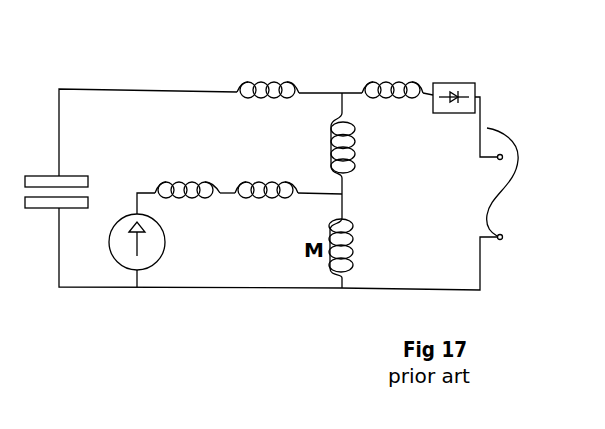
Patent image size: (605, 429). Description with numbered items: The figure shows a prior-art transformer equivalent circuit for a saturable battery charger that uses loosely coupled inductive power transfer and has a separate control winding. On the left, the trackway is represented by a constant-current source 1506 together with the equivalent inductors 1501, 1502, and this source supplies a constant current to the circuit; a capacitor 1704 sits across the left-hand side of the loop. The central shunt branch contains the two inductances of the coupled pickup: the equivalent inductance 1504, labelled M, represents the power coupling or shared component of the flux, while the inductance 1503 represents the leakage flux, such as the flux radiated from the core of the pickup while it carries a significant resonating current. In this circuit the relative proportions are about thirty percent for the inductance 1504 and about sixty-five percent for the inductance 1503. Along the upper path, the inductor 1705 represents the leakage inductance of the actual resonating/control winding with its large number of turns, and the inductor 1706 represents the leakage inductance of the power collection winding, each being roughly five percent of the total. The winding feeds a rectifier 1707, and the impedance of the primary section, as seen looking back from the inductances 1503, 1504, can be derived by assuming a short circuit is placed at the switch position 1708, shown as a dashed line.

The capacitor 1704 is at (105, 156).
The leakage inductance of resonating/control winding 1705 is at (285, 82).
The leakage inductance of power collection winding 1706 is at (413, 58).
The diode 1707 is at (486, 59).
The short circuit location 1708 is at (509, 173).
The equivalent inductor 1501 is at (219, 183).
The equivalent inductor 1502 is at (291, 183).
The leakage flux inductance 1503 is at (353, 172).
The equivalent inductance M 1504 is at (350, 268).
The power source 1506 is at (145, 272).